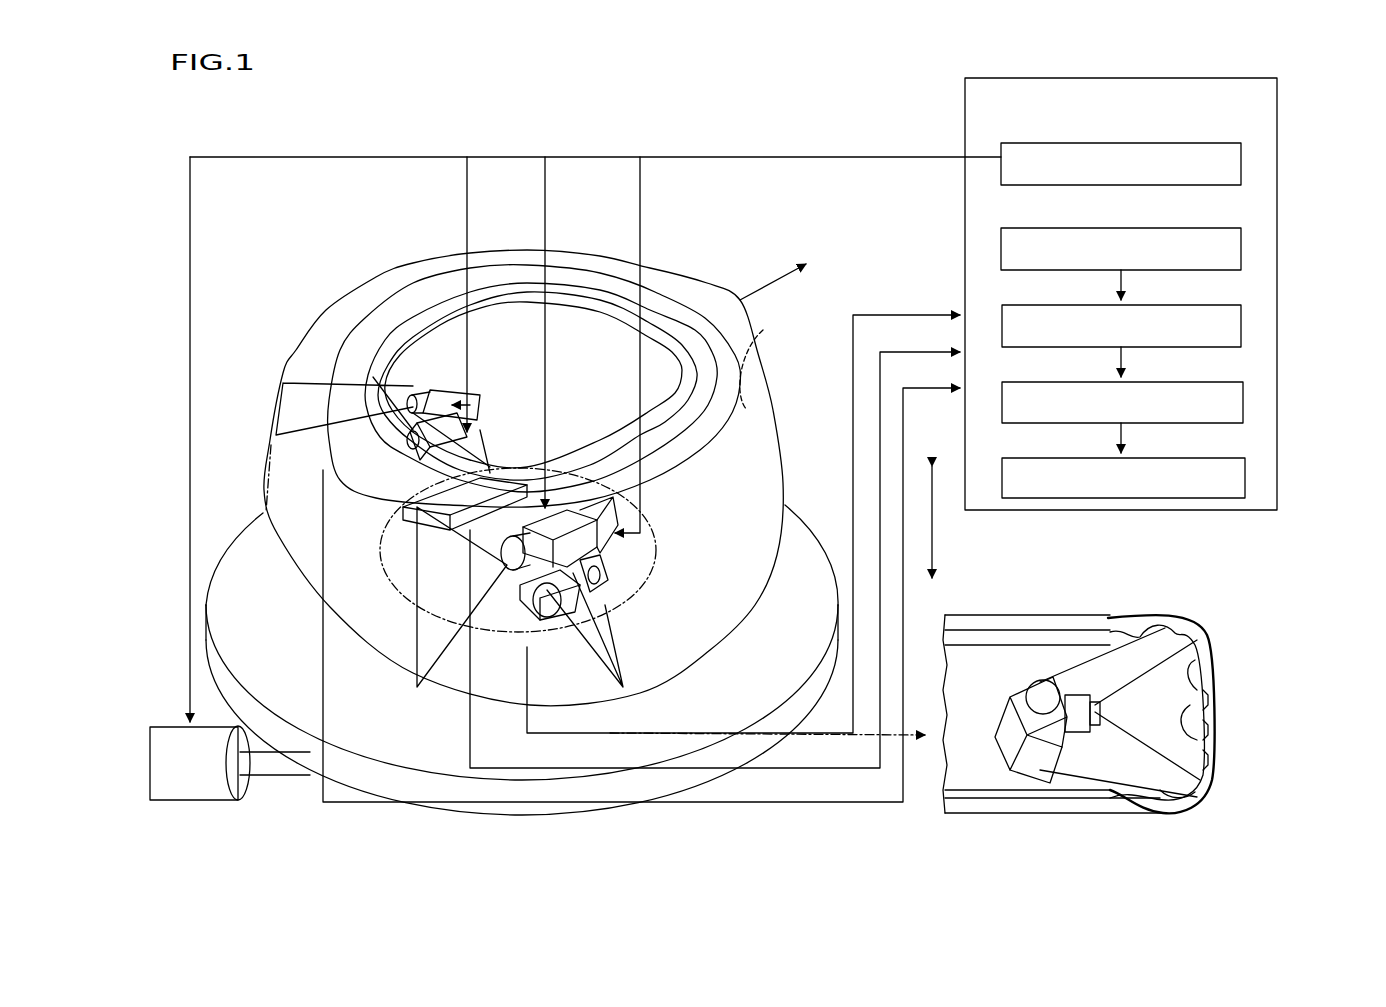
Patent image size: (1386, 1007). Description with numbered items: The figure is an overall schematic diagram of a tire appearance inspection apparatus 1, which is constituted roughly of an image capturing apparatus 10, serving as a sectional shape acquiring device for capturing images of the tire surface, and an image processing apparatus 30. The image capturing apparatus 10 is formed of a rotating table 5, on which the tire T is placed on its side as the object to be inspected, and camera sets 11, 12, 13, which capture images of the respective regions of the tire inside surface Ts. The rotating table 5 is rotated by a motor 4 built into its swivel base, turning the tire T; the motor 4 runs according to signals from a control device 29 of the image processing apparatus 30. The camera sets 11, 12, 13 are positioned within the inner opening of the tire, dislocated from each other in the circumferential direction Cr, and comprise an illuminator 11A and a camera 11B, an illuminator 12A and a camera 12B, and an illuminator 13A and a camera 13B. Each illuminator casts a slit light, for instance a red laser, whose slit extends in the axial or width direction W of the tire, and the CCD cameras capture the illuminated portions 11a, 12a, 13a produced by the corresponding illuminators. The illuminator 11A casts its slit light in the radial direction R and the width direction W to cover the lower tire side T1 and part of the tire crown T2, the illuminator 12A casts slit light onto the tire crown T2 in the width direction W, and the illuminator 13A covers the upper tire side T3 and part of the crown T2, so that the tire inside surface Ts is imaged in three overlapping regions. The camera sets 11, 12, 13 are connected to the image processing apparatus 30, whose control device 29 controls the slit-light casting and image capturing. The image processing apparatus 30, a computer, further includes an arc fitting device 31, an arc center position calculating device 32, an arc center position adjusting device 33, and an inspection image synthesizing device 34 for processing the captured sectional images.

The tire appearance inspection apparatus 1 is at (700, 82).
The motor 4 is at (205, 778).
The rotating table 5 is at (262, 513).
The image capturing apparatus 10 is at (487, 438).
The camera set 11 is at (715, 543).
The illuminator 11A is at (598, 545).
The camera 11B is at (588, 590).
The camera set 12 is at (610, 398).
The illuminator 12A is at (550, 522).
The camera 12B is at (495, 488).
The camera set 13 is at (508, 340).
The illuminator 13A is at (458, 392).
The camera 13B is at (465, 423).
The control device 29 is at (1214, 143).
The image processing apparatus 30 is at (1045, 78).
The arc fitting device 31 is at (1217, 228).
The arc center position calculating device 32 is at (1217, 305).
The arc center position adjusting device 33 is at (1217, 382).
The inspection image synthesizing device 34 is at (1217, 458).
The illuminated portion 11a is at (1180, 813).
The illuminated portion 12a is at (1215, 666).
The illuminated portion 13a is at (1125, 640).
The tire T is at (318, 312).
The lower tire side T1 is at (693, 628).
The tire crown T2 is at (755, 530).
The upper tire side T3 is at (727, 415).
The tire inside surface Ts is at (757, 338).
The circumferential direction Cr is at (678, 270).
The radial direction R is at (773, 278).
The axial (width) direction W is at (933, 525).